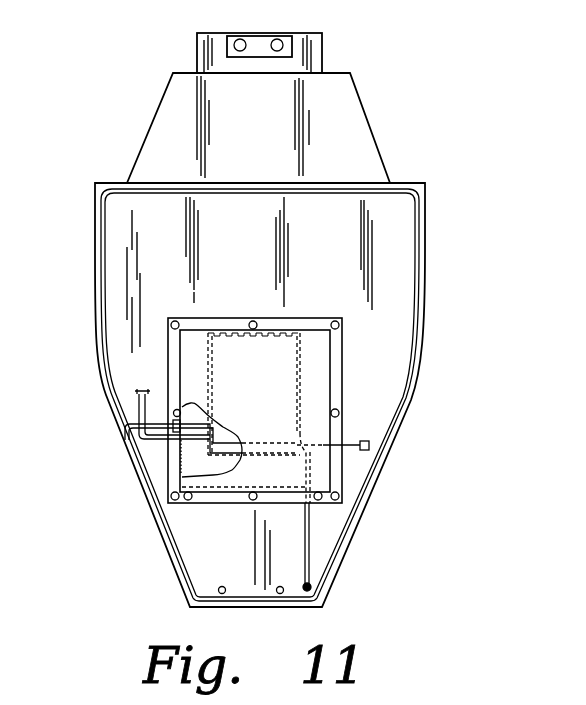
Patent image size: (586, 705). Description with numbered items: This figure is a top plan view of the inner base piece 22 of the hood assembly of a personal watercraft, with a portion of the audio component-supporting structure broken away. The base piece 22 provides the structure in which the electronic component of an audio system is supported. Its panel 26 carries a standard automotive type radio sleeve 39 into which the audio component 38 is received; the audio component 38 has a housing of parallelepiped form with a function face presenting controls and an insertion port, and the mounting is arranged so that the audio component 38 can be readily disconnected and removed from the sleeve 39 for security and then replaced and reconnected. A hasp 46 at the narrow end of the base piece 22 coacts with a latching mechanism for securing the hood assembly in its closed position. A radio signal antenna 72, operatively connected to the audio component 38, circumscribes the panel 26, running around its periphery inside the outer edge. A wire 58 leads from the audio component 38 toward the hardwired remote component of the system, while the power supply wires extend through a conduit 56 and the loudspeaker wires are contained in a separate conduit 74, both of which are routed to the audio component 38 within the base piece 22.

The inner base piece 22 is at (388, 172).
The panel 26 is at (400, 258).
The audio component 38 is at (229, 433).
The radio sleeve 39 is at (178, 463).
The hasp 46 is at (257, 38).
The conduit 56 is at (311, 543).
The wire 58 is at (352, 440).
The radio signal antenna 72 is at (416, 351).
The conduit 74 is at (140, 409).